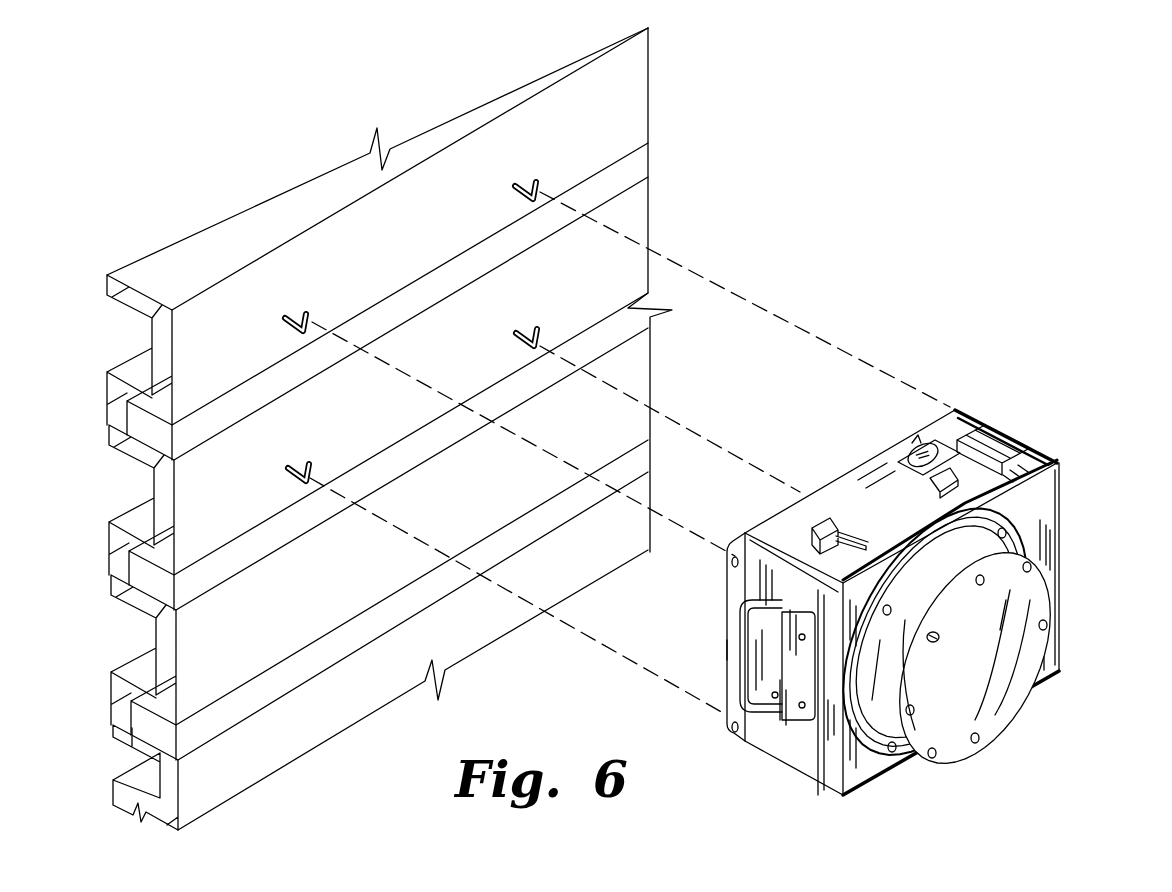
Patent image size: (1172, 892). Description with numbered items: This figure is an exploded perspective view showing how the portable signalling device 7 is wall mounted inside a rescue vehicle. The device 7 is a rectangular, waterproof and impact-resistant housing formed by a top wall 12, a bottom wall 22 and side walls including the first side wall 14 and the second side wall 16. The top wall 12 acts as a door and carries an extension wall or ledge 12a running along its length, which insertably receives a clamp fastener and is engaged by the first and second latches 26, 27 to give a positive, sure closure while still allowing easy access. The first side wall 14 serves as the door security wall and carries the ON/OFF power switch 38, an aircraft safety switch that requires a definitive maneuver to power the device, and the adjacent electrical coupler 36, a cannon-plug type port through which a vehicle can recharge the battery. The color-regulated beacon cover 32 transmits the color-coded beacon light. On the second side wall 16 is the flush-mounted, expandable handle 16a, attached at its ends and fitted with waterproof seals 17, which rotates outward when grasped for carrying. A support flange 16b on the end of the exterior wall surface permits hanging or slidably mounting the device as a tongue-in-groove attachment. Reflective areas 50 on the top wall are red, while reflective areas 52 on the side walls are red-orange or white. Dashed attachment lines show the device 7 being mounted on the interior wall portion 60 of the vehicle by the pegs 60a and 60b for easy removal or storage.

The portable signalling device 7 is at (1068, 382).
The top wall 12 is at (941, 602).
The extension wall or ledge 12a is at (1028, 447).
The first side wall 14 is at (862, 474).
The second side wall 16 is at (753, 567).
The handle 16a is at (770, 718).
The support flange 16b is at (728, 650).
The waterproof seals 17 is at (810, 723).
The bottom wall 22 is at (735, 511).
The first latch 26 is at (997, 430).
The second latch 27 is at (822, 522).
The beacon cover 32 is at (966, 677).
The electrical coupler 36 is at (920, 447).
The ON/OFF power switch 38 is at (950, 460).
The reflective areas 50 is at (1018, 516).
The reflective areas 52 is at (888, 525).
The interior wall portion 60 is at (447, 227).
The peg 60a is at (296, 316).
The peg 60b is at (530, 182).